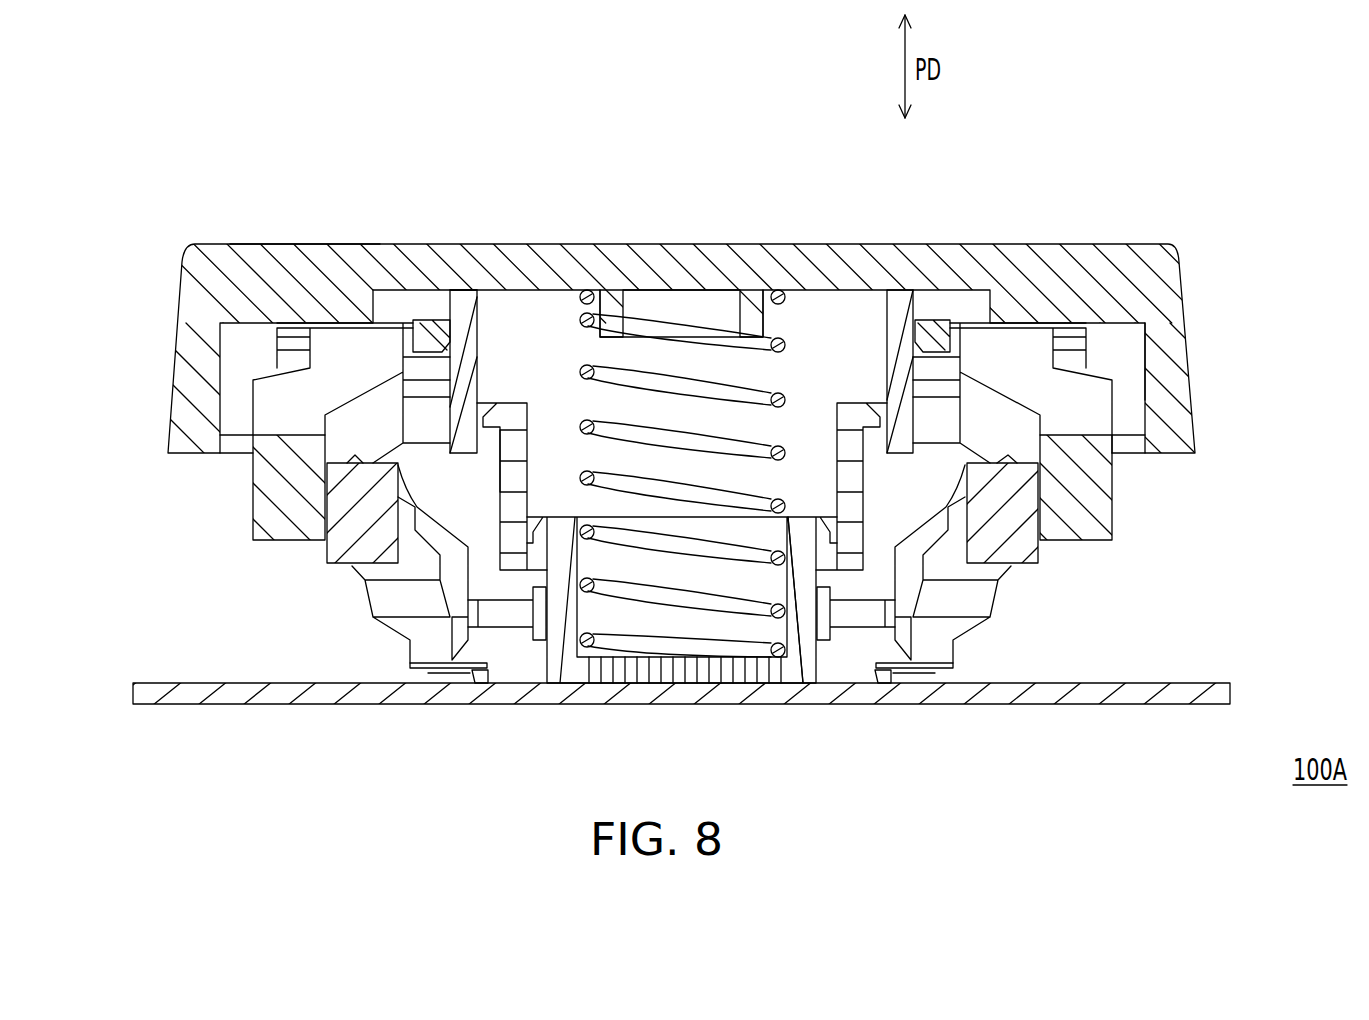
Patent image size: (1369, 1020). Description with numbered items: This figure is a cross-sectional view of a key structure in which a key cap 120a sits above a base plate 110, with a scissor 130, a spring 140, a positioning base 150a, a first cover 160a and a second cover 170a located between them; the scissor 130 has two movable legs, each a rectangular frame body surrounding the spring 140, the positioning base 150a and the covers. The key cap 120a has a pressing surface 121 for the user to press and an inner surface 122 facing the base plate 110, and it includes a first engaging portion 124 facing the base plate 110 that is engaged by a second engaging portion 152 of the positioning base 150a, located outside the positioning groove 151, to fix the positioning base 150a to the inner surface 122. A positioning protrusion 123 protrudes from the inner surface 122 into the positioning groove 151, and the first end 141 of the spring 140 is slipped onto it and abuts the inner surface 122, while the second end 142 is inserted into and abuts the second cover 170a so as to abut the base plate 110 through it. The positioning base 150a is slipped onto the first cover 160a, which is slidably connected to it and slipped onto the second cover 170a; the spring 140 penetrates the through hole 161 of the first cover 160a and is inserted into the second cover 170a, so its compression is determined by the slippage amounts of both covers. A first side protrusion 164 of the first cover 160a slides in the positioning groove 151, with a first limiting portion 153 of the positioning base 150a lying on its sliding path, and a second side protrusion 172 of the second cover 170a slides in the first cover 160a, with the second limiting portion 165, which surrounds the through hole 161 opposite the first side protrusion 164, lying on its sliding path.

The base plate 110 is at (328, 692).
The key cap 120a is at (1147, 285).
The pressing surface 121 is at (309, 231).
The inner surface 122 is at (1126, 336).
The positioning protrusion 123 is at (612, 317).
The first engaging portion 124 is at (427, 335).
The scissor 130 is at (1073, 493).
The spring 140 is at (750, 443).
The first end 141 is at (773, 289).
The second end 142 is at (682, 650).
The positioning base 150a is at (900, 375).
The positioning groove 151 is at (530, 330).
The second engaging portion 152 is at (443, 292).
The first limiting portion 153 is at (510, 436).
The first cover 160a is at (505, 507).
The through hole 161 is at (578, 563).
The first side protrusion 164 is at (507, 415).
The second limiting portion 165 is at (830, 553).
The second cover 170a is at (803, 627).
The second side protrusion 172 is at (845, 527).